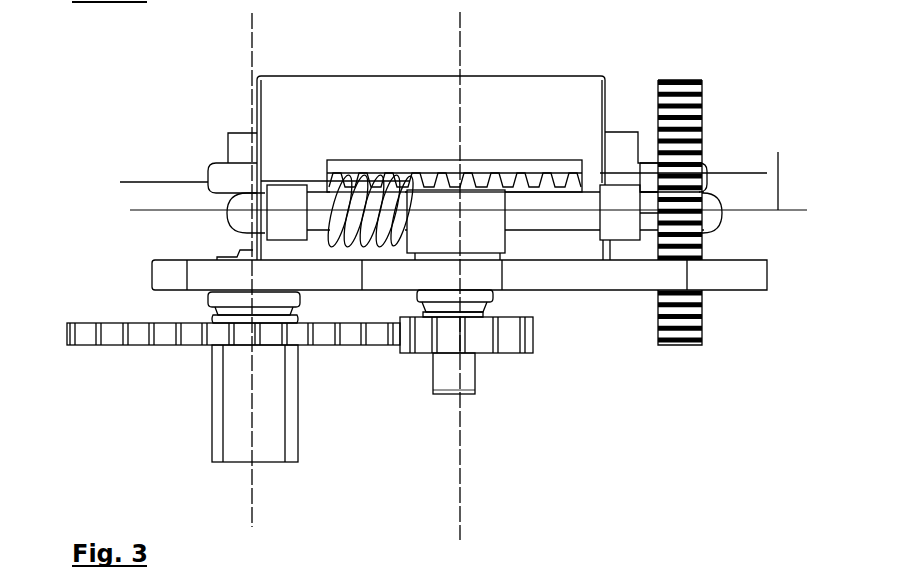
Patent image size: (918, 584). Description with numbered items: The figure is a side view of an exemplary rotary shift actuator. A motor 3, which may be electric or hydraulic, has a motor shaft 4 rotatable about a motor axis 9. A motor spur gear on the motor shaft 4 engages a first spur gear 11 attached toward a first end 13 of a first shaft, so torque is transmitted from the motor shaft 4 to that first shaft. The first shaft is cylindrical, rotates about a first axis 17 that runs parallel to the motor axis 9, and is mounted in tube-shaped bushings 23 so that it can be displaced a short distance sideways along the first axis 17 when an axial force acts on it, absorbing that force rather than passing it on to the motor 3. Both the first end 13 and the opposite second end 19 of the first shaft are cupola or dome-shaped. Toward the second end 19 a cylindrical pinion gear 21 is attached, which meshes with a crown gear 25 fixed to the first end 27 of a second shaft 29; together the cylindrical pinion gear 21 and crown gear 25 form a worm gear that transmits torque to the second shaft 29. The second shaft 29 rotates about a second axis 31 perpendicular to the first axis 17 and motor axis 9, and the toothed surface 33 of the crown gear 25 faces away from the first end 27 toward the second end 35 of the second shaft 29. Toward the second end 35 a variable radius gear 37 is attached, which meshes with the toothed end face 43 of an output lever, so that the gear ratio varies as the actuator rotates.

The motor 3 is at (288, 98).
The motor shaft 4 is at (648, 162).
The motor axis 9 is at (722, 172).
The first spur gear 11 is at (687, 345).
The first end 13 is at (712, 220).
The first axis 17 is at (468, 167).
The second end 19 is at (230, 219).
The cylindrical pinion gear 21 is at (330, 185).
The tubular bushings 23 is at (300, 225).
The crown gear 25 is at (500, 163).
The first end 27 is at (483, 187).
The second shaft 29 is at (465, 367).
The second axis 31 is at (465, 42).
The toothed surface 33 is at (307, 13).
The second end 35 is at (447, 386).
The variable radius gear 37 is at (532, 340).
The toothed end face 43 is at (123, 340).